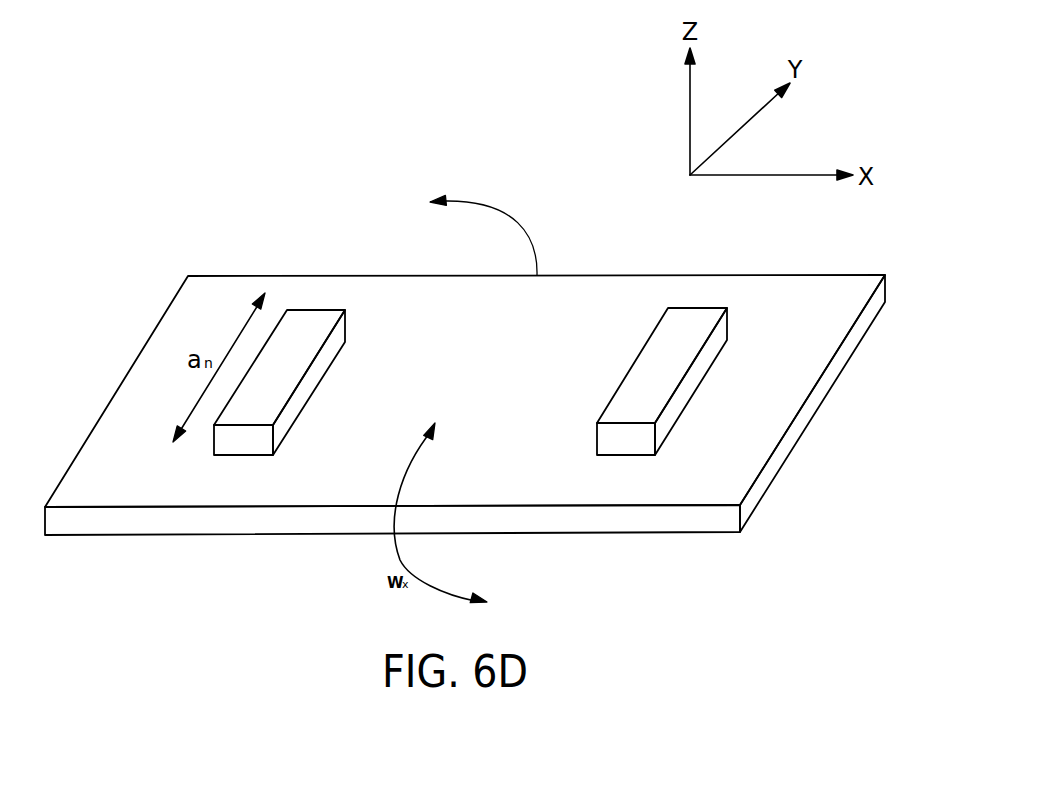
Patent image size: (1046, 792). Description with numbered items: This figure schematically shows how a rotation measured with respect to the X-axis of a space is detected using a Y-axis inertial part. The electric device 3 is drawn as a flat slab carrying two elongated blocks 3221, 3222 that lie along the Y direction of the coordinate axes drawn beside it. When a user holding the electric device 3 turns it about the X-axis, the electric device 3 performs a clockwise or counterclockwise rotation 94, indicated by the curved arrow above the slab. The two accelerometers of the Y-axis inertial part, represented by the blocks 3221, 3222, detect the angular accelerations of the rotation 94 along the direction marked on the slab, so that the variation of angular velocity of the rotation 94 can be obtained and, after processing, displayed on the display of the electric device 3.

The electric device 3 is at (164, 220).
The rotation 94 is at (523, 222).
The first protruding block 3221 is at (237, 447).
The second protruding block 3222 is at (625, 445).